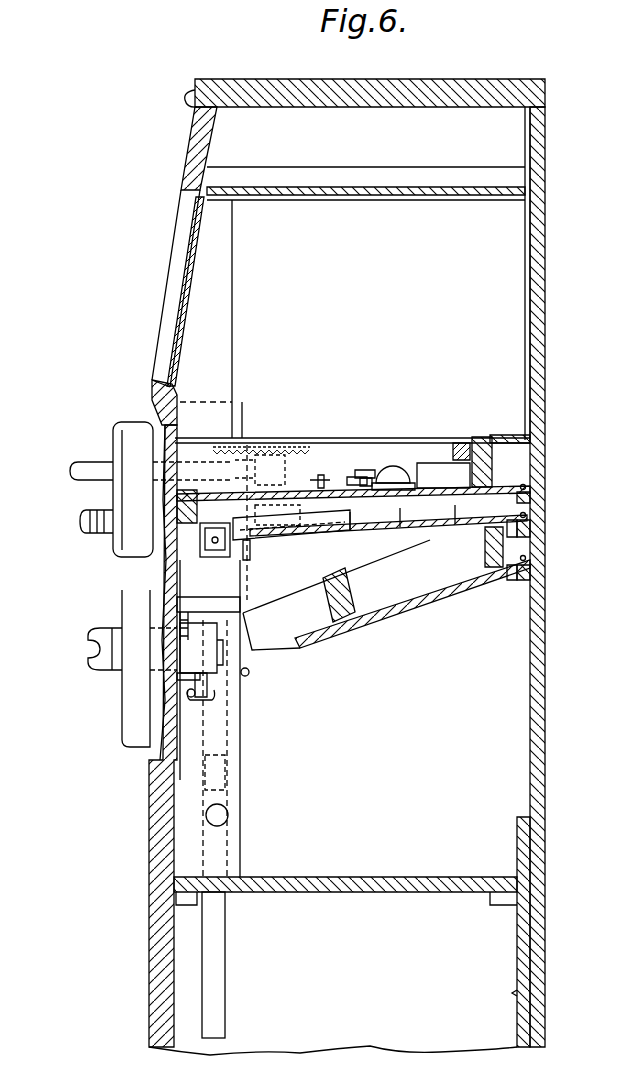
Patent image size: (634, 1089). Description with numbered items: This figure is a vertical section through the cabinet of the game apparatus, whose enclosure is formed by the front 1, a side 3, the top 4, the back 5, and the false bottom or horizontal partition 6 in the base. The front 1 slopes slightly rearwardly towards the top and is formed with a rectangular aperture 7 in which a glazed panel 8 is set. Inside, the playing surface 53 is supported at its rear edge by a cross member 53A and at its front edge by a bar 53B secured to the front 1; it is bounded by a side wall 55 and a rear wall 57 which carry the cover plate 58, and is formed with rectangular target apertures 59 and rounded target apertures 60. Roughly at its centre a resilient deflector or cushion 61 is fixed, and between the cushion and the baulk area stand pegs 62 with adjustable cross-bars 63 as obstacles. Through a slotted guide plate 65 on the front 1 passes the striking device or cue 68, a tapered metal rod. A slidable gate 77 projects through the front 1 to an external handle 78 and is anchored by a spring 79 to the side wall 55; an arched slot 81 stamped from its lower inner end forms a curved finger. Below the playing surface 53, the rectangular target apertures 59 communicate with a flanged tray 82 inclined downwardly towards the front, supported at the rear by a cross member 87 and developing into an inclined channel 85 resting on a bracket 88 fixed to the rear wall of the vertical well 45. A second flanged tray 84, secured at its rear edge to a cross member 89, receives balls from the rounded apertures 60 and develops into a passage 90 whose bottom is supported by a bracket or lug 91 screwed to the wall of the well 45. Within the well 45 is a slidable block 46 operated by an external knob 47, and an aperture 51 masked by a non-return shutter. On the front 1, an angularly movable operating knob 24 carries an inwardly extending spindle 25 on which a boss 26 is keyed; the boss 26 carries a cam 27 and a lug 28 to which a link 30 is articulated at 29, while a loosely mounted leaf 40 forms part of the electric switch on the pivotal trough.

The front 1 is at (173, 825).
The side 3 is at (367, 1025).
The top 4 is at (443, 100).
The back 5 is at (537, 677).
The false bottom or horizontal partition 6 is at (440, 883).
The rectangular aperture 7 is at (183, 232).
The glazed panel 8 is at (188, 263).
The operating knob or handle 24 is at (97, 647).
The spindle 25 is at (218, 640).
The boss 26 is at (170, 680).
The cam 27 is at (167, 623).
The lug 28 is at (207, 680).
The articulation 29 is at (207, 697).
The link 30 is at (193, 698).
The leaf 40 is at (200, 548).
The vertical well 45 is at (218, 745).
The slidable block 46 is at (217, 937).
The external knob 47 is at (217, 815).
The aperture 51 is at (170, 605).
The playing surface 53 is at (287, 507).
The cross member 53A is at (530, 491).
The bar 53B is at (175, 522).
The side wall 55 is at (393, 468).
The rear wall 57 is at (492, 458).
The cover plate 58 is at (490, 437).
The target apertures 59 is at (437, 470).
The target apertures 60 is at (405, 480).
The deflector or cushion 61 is at (377, 466).
The pegs 62 is at (355, 478).
The cross-bars 63 is at (318, 476).
The slotted guide plate 65 is at (112, 445).
The striking device or cue 68 is at (83, 468).
The gate 77 is at (248, 548).
The handle 78 is at (82, 520).
The spring 79 is at (293, 443).
The arched slot 81 is at (247, 445).
The flanged tray 82 is at (383, 530).
The flanged tray 84 is at (437, 590).
The inclined channel 85 is at (325, 515).
The cross member 87 is at (530, 527).
The bracket 88 is at (250, 582).
The cross member 89 is at (530, 572).
The passage 90 is at (312, 617).
The bracket or lug 91 is at (248, 675).